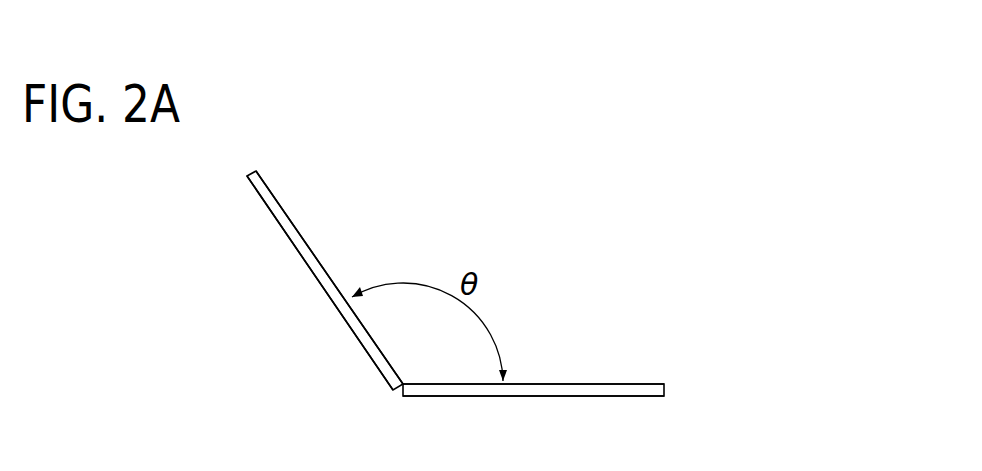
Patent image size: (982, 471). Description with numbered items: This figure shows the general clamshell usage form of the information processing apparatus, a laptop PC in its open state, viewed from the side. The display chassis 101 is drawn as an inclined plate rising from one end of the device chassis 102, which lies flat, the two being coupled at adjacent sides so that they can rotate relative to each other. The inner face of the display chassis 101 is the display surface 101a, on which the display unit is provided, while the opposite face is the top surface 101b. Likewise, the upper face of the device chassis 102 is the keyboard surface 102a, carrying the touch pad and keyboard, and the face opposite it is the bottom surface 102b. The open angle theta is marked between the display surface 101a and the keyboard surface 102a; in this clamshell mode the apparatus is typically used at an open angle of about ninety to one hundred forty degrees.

The display chassis 101 is at (258, 183).
The display surface 101a is at (288, 217).
The top surface 101b is at (310, 277).
The device chassis 102 is at (665, 388).
The keyboard surface 102a is at (547, 383).
The bottom surface 102b is at (580, 397).